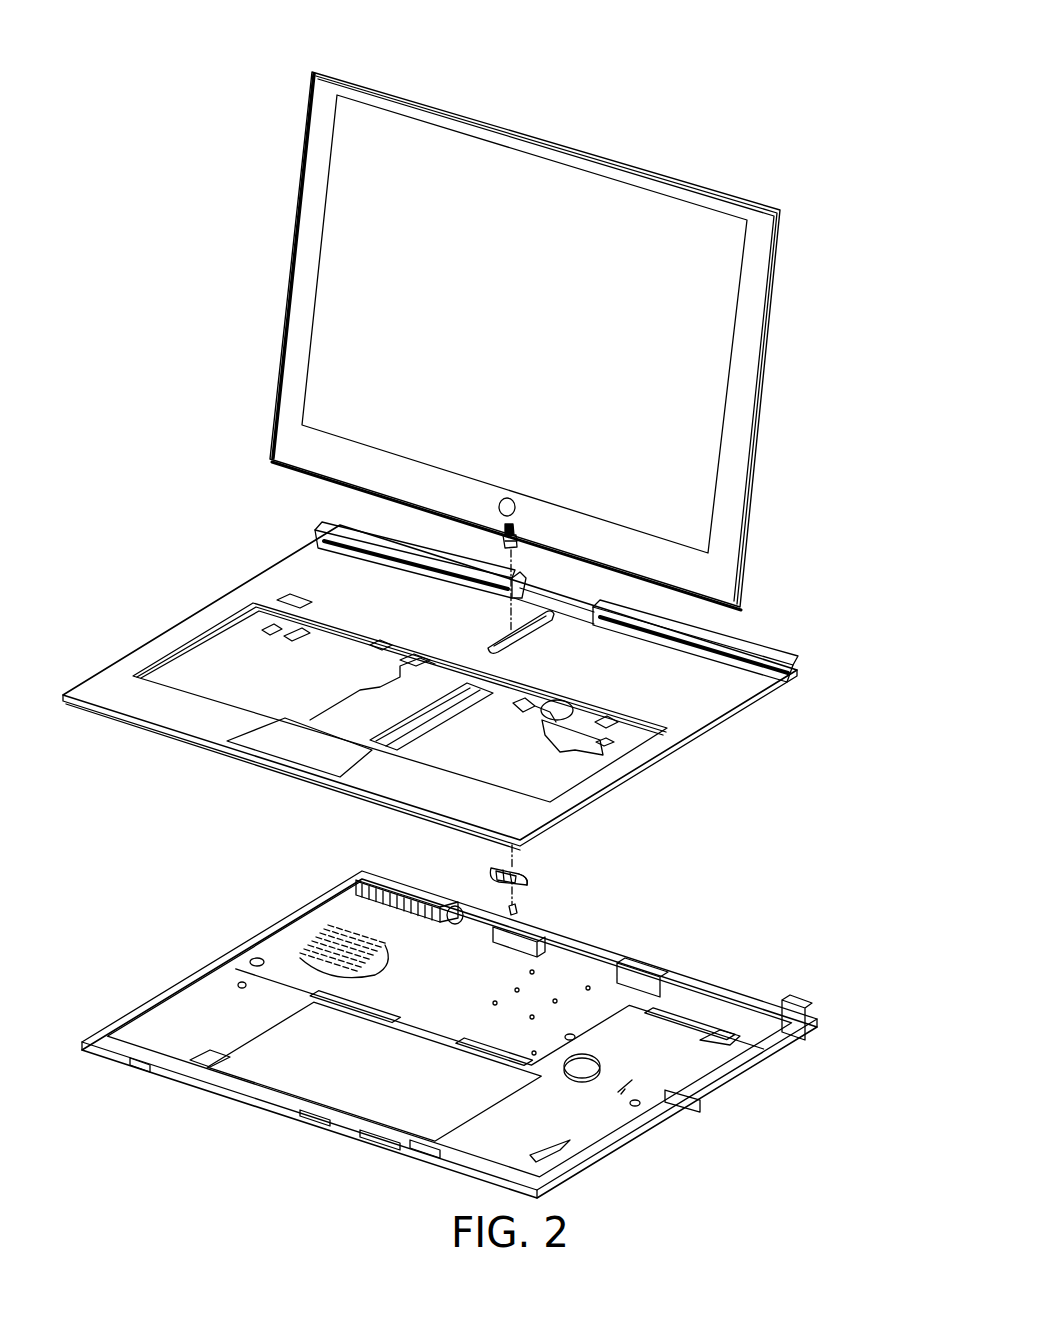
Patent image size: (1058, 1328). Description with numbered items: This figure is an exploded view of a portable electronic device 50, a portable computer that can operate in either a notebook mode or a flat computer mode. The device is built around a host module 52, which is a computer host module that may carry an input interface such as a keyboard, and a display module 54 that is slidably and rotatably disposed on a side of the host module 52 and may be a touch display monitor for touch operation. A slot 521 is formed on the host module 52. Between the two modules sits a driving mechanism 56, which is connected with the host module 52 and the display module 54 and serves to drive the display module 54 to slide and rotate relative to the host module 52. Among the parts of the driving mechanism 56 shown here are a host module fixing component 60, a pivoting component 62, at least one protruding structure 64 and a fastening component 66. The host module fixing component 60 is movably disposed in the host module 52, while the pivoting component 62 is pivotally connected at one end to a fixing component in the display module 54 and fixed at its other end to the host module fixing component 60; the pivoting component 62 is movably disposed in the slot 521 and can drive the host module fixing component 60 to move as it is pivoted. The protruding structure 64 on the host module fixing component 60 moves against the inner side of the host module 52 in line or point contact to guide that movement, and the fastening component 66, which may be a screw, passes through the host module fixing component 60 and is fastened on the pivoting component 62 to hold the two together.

The portable electronic device 50 is at (785, 76).
The host module 52 is at (158, 597).
The slot 521 is at (492, 637).
The display module 54 is at (683, 173).
The driving mechanism 56 is at (838, 625).
The host module fixing component 60 is at (522, 878).
The pivoting component 62 is at (517, 548).
The protruding structure 64 is at (520, 878).
The fastening component 66 is at (517, 913).